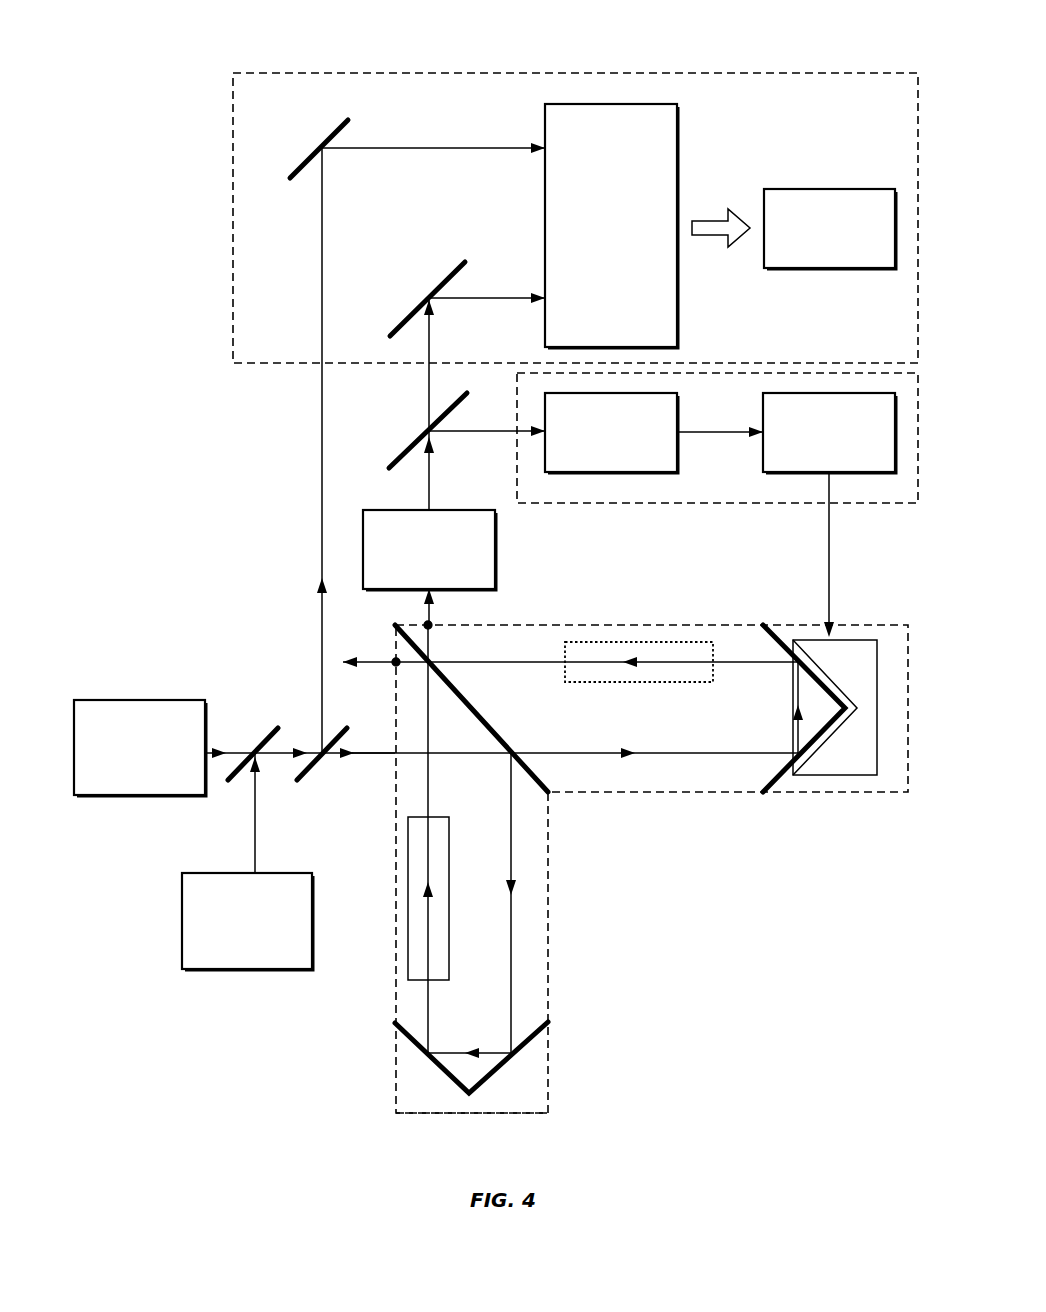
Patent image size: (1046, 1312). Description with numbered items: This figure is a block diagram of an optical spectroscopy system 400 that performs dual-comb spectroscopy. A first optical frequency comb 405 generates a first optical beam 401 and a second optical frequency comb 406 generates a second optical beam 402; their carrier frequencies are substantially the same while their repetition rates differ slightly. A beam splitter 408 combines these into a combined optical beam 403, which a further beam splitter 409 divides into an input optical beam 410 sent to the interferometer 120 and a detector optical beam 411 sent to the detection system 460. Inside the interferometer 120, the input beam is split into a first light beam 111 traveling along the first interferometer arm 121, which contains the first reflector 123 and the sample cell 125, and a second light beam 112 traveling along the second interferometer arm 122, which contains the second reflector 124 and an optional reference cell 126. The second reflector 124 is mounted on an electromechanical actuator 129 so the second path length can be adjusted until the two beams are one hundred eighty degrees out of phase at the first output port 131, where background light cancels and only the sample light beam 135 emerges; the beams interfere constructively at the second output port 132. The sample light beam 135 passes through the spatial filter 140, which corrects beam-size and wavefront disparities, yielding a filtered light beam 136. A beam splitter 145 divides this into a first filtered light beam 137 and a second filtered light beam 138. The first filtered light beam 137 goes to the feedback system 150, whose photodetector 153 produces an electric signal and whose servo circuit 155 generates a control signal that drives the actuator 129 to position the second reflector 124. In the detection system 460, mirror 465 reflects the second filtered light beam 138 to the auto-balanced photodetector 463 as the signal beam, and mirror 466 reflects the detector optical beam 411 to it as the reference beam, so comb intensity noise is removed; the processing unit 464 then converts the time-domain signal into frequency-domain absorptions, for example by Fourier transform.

The optical spectroscopy system 400 is at (457, 26).
The detection system 460 is at (805, 73).
The mirror 466 is at (330, 137).
The detector optical beam 411 is at (437, 147).
The auto-balanced photodetector 463 is at (680, 132).
The processing unit 464 is at (818, 189).
The mirror 465 is at (440, 278).
The second filtered light beam 138 is at (470, 298).
The servo circuit 155 is at (798, 393).
The photodetector 153 is at (680, 406).
The feedback system 150 is at (762, 503).
The beam splitter 145 is at (407, 448).
The filtered light beam 136 is at (429, 475).
The first filtered light beam 137 is at (487, 433).
The spatial filter 140 is at (363, 550).
The first output port 131 is at (426, 622).
The sample light beam 135 is at (435, 609).
The reference cell 126 is at (645, 642).
The second interferometer arm 122 is at (857, 625).
The electromechanical actuator 129 is at (880, 660).
The second reflector 124 is at (780, 776).
The second light beam 112 is at (582, 753).
The first light beam 111 is at (510, 802).
The interferometer 120 is at (615, 850).
The first interferometer arm 121 is at (395, 1077).
The first reflector 123 is at (530, 1040).
The sample cell 125 is at (407, 852).
The first optical frequency comb 405 is at (148, 700).
The second optical frequency comb 406 is at (222, 873).
The first optical beam 401 is at (207, 762).
The second optical beam 402 is at (257, 810).
The beam splitter 408 is at (258, 745).
The combined optical beam 403 is at (290, 745).
The beam splitter 409 is at (322, 747).
The input optical beam 410 is at (360, 756).
The second output port 132 is at (390, 667).